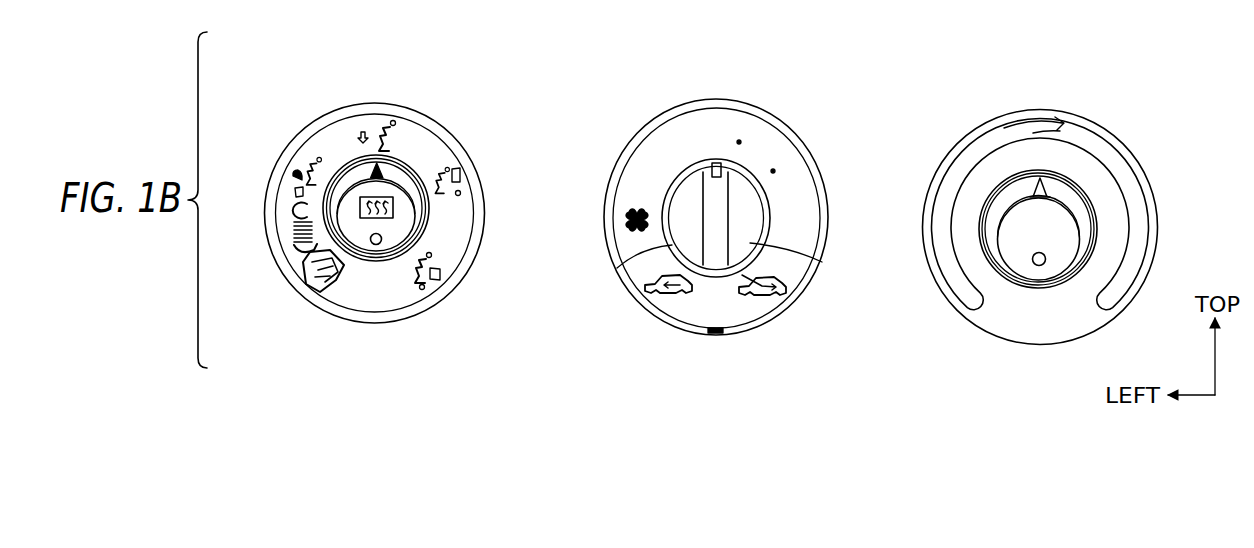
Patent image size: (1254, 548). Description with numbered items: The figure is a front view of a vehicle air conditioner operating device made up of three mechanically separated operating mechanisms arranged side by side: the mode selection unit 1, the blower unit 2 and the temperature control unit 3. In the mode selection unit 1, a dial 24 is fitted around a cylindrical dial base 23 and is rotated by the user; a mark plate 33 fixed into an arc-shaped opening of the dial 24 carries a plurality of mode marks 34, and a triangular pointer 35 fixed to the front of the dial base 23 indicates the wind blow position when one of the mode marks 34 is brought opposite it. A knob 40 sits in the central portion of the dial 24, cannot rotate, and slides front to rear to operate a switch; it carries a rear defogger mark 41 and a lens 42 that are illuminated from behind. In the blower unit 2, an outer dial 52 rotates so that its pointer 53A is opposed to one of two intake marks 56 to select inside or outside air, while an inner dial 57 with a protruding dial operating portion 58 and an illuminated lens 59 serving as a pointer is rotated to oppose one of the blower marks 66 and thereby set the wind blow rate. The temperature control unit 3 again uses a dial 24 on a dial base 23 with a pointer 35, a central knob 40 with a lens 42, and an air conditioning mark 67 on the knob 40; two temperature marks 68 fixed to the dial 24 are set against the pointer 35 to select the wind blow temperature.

The mode selection unit 1 is at (443, 120).
The blower unit 2 is at (802, 131).
The temperature control unit 3 is at (1132, 145).
The dial base 23 is at (350, 177).
The dial 24 is at (380, 323).
The mark plate 33 is at (453, 238).
The mode marks 34 is at (297, 158).
The pointer 35 is at (392, 166).
The knob 40 is at (342, 225).
The rear defogger mark 41 is at (396, 204).
The lens 42 is at (376, 246).
The outer dial 52 is at (675, 334).
The pointer 53A is at (715, 336).
The intake marks 56 is at (644, 292).
The inner dial 57 is at (752, 243).
The dial operating portion 58 is at (668, 248).
The lens 59 is at (715, 162).
The blower marks 66 is at (680, 128).
The air conditioning mark 67 is at (1062, 228).
The temperature marks 68 is at (958, 165).